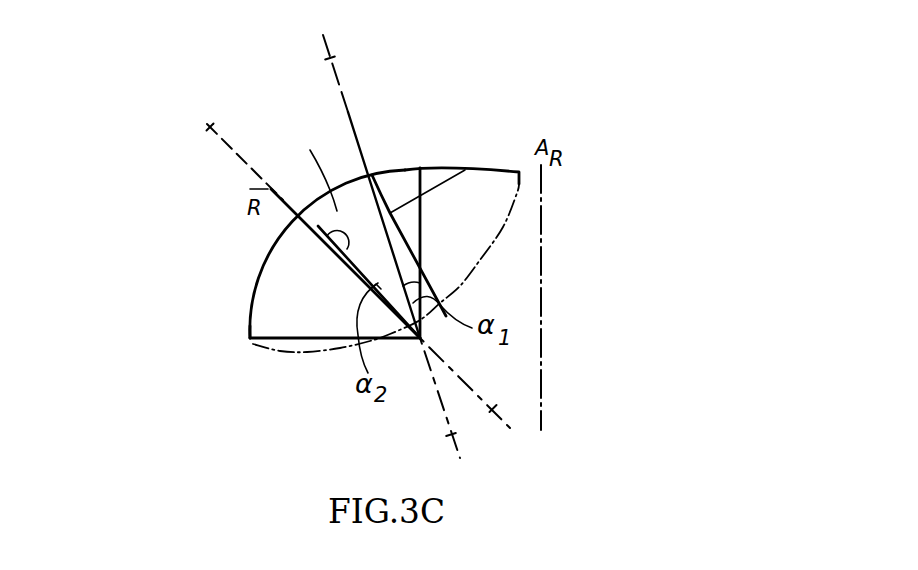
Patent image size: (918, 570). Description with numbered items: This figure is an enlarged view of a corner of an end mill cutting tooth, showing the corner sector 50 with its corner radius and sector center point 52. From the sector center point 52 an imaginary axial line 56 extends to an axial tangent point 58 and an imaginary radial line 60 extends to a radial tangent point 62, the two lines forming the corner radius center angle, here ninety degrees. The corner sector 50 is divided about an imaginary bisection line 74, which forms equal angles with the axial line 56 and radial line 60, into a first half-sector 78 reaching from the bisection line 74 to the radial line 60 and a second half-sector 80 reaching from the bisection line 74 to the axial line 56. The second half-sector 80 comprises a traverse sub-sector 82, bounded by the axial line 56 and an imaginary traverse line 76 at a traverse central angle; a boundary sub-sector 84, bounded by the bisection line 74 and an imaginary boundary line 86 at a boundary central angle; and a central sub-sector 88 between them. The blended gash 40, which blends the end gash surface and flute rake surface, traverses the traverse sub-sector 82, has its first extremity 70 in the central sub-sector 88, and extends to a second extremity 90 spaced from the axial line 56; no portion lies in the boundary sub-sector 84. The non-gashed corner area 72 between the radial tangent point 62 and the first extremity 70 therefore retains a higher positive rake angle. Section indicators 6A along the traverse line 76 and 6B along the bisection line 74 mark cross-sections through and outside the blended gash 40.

The blended gash 40 is at (378, 140).
The corner sector 50 is at (195, 138).
The sector center point 52 is at (413, 350).
The imaginary axial line 56 is at (421, 248).
The axial tangent point 58 is at (428, 160).
The imaginary radial line 60 is at (293, 338).
The radial tangent point 62 is at (245, 343).
The first extremity 70 is at (298, 192).
The corner area 72 is at (205, 240).
The imaginary bisection line 74 is at (345, 260).
The imaginary traverse line 76 is at (396, 168).
The first half-sector 78 is at (258, 306).
The second half-sector 80 is at (309, 171).
The traverse sub-sector 82 is at (408, 155).
The boundary sub-sector 84 is at (285, 198).
The imaginary boundary line 86 is at (327, 234).
The central sub-sector 88 is at (346, 164).
The second extremity 90 is at (472, 165).
The cross-section line 6A is at (354, 50).
The cross-section line 6B is at (210, 128).